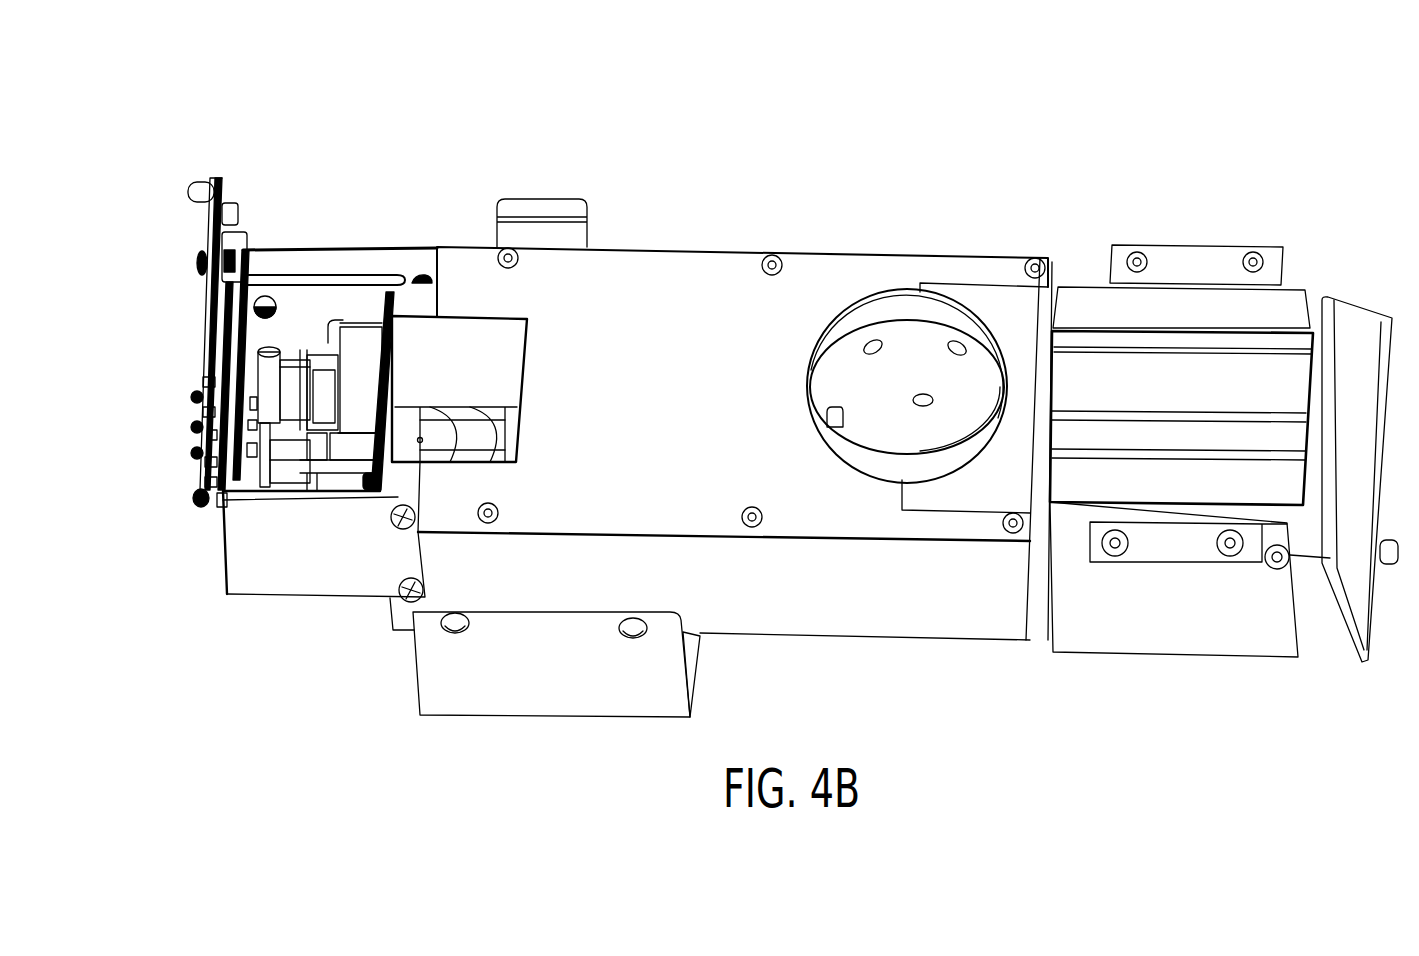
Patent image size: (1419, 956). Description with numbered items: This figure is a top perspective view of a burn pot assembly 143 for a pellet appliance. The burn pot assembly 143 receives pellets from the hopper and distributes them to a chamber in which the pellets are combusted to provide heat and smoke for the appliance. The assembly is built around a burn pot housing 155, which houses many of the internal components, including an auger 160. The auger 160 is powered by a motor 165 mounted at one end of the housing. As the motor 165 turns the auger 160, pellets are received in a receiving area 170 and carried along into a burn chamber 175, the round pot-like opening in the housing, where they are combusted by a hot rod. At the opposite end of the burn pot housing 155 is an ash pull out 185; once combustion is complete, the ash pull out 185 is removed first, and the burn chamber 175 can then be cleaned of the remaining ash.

The burn pot assembly 143 is at (312, 146).
The burn pot housing 155 is at (668, 297).
The auger 160 is at (505, 430).
The motor 165 is at (255, 386).
The receiving area 170 is at (397, 440).
The burn chamber 175 is at (893, 402).
The ash pull out 185 is at (1212, 392).